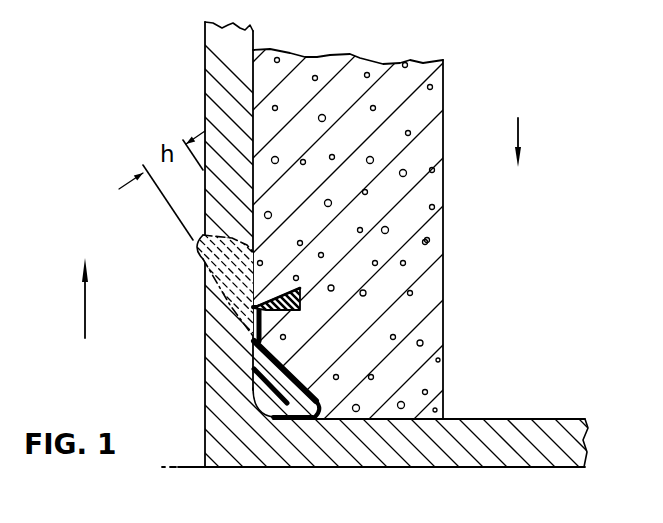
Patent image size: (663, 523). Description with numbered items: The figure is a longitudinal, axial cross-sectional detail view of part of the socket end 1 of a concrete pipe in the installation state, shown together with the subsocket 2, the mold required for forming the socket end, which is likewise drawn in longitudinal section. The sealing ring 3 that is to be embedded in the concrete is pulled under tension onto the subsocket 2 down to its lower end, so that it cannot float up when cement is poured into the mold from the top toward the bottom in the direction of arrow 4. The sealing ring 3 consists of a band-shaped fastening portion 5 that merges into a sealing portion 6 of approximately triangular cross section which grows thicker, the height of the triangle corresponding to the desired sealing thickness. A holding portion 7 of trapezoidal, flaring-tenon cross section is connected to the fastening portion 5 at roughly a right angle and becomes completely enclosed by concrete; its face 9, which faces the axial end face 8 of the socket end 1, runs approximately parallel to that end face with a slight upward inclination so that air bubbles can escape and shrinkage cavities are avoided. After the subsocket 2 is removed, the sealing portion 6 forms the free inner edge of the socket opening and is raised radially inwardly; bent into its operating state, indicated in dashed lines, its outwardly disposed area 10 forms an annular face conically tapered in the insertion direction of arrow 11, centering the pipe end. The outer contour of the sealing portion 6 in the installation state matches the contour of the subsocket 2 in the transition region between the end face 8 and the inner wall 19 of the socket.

The socket end 1 is at (430, 277).
The subsocket 2 is at (553, 458).
The sealing ring 3 is at (300, 366).
The arrow 4 is at (518, 123).
The band-shaped fastening portion 5 is at (252, 335).
The sealing portion 6 is at (278, 393).
The holding portion 7 is at (288, 292).
The axial end face 8 is at (342, 420).
The face of the holding member 9 is at (292, 311).
The outwardly disposed area 10 is at (212, 284).
The arrow 11 is at (85, 317).
The inner wall 19 is at (252, 73).